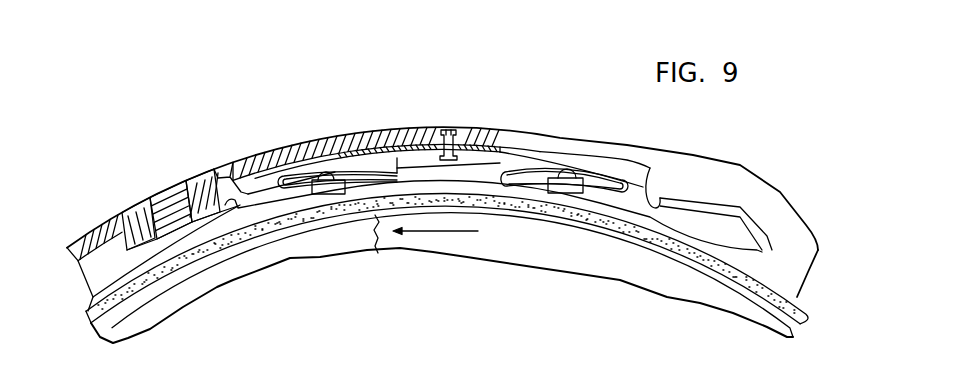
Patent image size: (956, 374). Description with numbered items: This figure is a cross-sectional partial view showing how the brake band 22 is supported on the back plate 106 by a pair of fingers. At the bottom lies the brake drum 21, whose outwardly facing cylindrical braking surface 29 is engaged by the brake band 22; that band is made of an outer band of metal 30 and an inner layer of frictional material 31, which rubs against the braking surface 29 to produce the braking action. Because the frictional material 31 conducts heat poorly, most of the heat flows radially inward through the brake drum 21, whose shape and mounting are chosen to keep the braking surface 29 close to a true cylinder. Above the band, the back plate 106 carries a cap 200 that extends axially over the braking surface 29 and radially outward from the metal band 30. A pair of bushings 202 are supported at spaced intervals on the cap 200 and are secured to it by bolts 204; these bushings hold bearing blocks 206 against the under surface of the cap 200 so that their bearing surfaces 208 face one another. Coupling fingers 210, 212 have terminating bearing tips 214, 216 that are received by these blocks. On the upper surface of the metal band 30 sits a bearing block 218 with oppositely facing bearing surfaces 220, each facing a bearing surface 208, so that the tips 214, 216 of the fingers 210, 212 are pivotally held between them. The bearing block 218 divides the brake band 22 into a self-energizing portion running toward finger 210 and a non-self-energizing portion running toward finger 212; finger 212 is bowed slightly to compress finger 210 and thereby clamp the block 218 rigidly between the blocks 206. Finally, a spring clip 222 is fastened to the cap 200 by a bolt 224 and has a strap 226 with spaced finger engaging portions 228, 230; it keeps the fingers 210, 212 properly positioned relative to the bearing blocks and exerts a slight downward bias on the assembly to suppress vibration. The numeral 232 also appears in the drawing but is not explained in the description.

The cap 200 is at (366, 142).
The bushings 202 is at (185, 188).
The bolts 204 is at (148, 247).
The bearing blocks 206 is at (215, 195).
The bearing surfaces 208 is at (230, 203).
The coupling finger 210 is at (262, 197).
The coupling finger 212 is at (513, 168).
The bearing tip 214 is at (242, 205).
The bearing tip 216 is at (397, 158).
The bearing block 218 is at (417, 168).
The bearing surfaces 220 is at (400, 172).
The spring clip 222 is at (368, 143).
The bolt 224 is at (455, 132).
The strap 226 is at (291, 369).
The finger engaging portion 228 is at (330, 195).
The finger engaging portion 230 is at (570, 194).
The lower member 232 is at (427, 369).
The back plate 106 is at (76, 278).
The brake drum 21 is at (210, 300).
The brake band 22 is at (292, 229).
The braking surface 29 is at (165, 282).
The outer band of metal 30 is at (80, 313).
The frictional material 31 is at (90, 327).